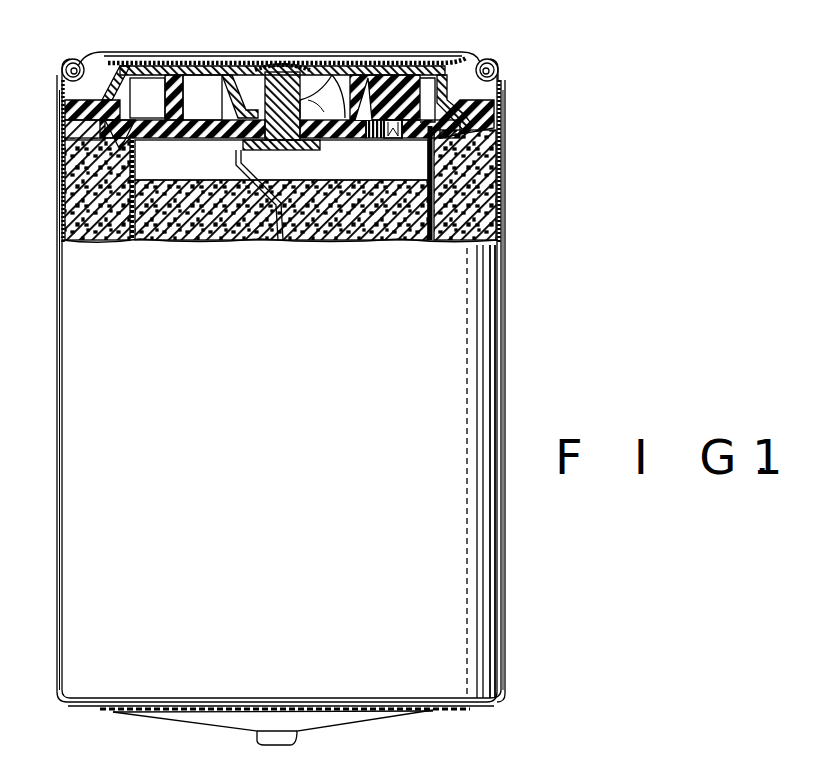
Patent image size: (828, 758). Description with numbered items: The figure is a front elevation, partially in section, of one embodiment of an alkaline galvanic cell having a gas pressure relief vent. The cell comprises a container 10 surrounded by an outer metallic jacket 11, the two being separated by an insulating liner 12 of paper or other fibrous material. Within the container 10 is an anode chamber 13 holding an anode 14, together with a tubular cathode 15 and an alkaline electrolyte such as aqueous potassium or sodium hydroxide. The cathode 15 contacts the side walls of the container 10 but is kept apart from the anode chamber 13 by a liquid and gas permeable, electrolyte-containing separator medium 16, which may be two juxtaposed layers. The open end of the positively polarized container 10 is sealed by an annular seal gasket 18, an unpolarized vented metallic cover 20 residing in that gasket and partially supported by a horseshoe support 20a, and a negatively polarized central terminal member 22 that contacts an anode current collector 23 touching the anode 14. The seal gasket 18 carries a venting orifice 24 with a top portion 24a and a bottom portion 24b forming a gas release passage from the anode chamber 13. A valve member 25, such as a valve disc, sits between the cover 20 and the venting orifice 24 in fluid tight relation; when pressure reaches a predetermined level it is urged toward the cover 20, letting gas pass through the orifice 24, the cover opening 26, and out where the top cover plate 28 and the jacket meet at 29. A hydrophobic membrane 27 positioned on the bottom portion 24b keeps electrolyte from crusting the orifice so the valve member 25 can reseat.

The container 10 is at (62, 190).
The outer metallic jacket 11 is at (61, 93).
The insulating liner 12 is at (62, 210).
The anode chamber 13 is at (203, 196).
The anode 14 is at (340, 226).
The tubular cathode 15 is at (90, 244).
The separator medium 16 is at (133, 160).
The seal gasket 18 is at (207, 175).
The vented metallic cover 20 is at (218, 101).
The horseshoe support 20a is at (183, 80).
The terminal member 22 is at (290, 70).
The anode current collector 23 is at (244, 164).
The venting orifice 24 is at (382, 140).
The top portion of venting orifice 24a is at (396, 86).
The bottom portion of venting orifice 24b is at (386, 140).
The valve member 25 is at (409, 95).
The cover opening 26 is at (147, 98).
The hydrophobic membrane 27 is at (348, 140).
The top cover plate 28 is at (107, 55).
The junction of top cover plate and outer metallic jacket 29 is at (66, 60).